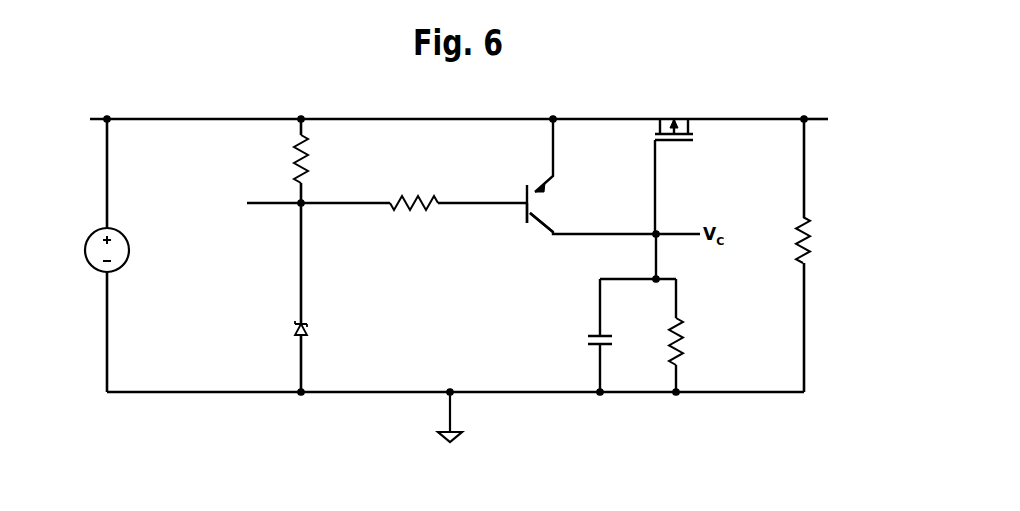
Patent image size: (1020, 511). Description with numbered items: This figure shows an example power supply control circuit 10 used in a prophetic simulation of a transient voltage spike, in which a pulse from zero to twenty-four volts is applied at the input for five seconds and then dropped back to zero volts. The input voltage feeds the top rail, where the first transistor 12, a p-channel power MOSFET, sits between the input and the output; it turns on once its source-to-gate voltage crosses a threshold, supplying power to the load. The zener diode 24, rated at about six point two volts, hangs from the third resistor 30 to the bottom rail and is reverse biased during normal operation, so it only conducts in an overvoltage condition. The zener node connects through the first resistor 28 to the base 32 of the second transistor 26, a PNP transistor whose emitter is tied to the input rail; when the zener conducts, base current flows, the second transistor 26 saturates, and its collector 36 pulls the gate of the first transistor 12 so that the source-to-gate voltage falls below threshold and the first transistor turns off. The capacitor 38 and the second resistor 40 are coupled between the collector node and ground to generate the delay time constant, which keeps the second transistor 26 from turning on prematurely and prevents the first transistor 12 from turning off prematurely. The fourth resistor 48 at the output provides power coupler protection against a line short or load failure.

The control circuit 10 is at (172, 420).
The first transistor 12 is at (693, 117).
The zener diode 24 is at (296, 330).
The second transistor 26 is at (600, 185).
The resistor R1 28 is at (438, 200).
The resistor R3 30 is at (299, 138).
The base 32 is at (513, 222).
The collector 36 is at (537, 222).
The capacitor C1 38 is at (598, 346).
The resistor R2 40 is at (680, 362).
The resistor R4 48 is at (808, 258).